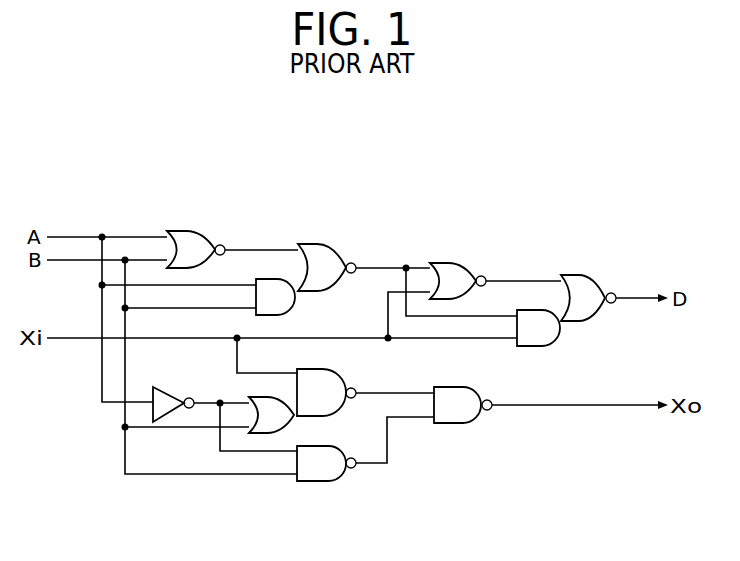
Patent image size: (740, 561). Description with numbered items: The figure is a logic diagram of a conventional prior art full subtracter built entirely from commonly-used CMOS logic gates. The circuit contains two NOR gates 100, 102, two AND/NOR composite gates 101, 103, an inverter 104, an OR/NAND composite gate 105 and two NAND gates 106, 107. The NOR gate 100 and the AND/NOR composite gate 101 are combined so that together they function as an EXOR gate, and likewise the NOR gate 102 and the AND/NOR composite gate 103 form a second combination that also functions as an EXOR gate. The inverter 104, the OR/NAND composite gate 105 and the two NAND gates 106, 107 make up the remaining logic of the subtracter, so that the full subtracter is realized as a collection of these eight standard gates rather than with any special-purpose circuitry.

The NOR gate 100 is at (188, 229).
The AND/NOR composite gate 101 is at (318, 243).
The NOR gate 102 is at (450, 262).
The AND/NOR composite gate 103 is at (583, 273).
The inverter 104 is at (163, 387).
The OR/NAND composite gate 105 is at (330, 368).
The NAND gate 106 is at (322, 482).
The NAND gate 107 is at (465, 386).